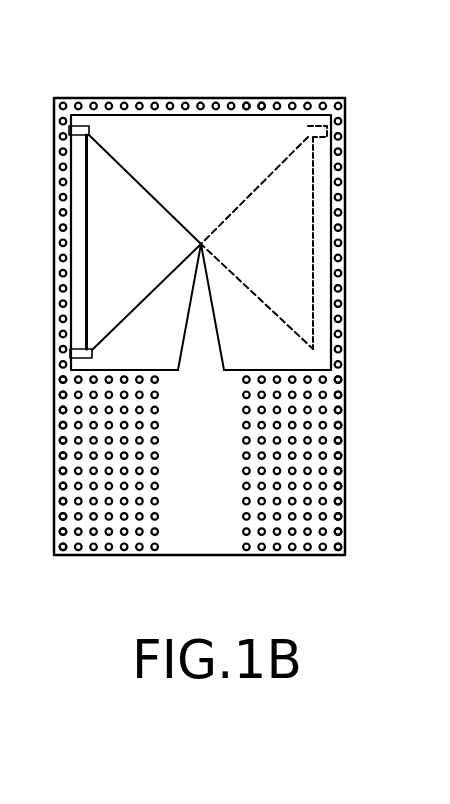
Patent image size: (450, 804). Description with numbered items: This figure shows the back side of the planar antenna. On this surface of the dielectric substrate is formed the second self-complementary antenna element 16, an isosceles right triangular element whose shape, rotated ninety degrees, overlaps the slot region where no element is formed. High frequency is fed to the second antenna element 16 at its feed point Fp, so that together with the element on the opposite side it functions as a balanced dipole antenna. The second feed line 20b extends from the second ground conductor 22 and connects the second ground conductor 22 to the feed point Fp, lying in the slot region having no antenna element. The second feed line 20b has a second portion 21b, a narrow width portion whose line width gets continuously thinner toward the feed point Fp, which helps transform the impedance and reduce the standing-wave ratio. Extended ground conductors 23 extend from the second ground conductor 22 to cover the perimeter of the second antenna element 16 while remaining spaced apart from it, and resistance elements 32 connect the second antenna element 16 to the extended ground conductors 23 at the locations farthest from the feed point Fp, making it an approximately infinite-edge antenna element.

The second self-complementary antenna element 16 is at (112, 238).
The second feed line 20b is at (203, 347).
The second portion (narrow width portion) 21b is at (203, 325).
The second ground conductor 22 is at (88, 538).
The extended ground conductors 23 is at (328, 98).
The resistance elements 32 is at (77, 126).
The feed point Fp is at (201, 243).